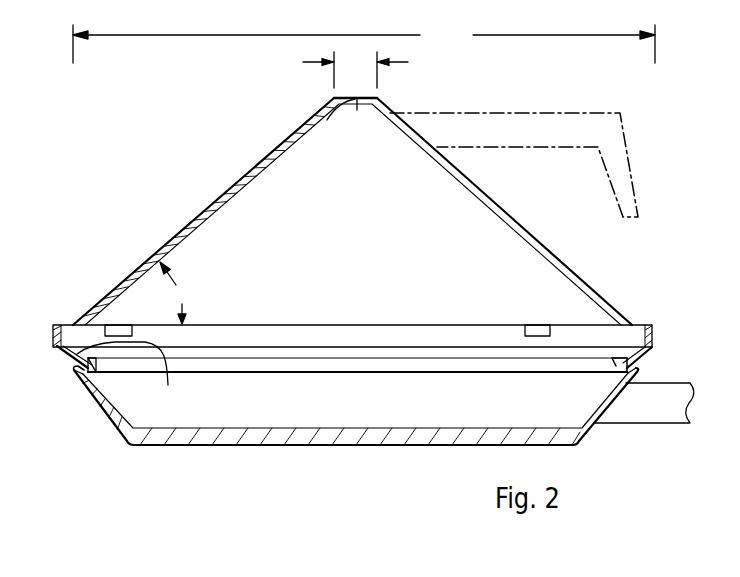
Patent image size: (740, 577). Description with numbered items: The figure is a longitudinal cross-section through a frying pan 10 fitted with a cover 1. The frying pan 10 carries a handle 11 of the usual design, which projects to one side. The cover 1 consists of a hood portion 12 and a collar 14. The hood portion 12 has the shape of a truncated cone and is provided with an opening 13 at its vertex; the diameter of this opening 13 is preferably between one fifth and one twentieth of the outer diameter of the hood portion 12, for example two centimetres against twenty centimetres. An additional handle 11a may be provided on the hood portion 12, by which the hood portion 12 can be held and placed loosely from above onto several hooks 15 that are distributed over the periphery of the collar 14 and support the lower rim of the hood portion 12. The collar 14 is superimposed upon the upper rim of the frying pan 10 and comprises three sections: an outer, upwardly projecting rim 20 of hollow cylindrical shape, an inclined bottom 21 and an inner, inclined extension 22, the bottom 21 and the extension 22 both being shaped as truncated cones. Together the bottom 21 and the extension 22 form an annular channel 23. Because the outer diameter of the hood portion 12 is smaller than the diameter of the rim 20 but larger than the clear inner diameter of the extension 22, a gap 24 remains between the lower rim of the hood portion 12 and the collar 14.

The cover 1 is at (176, 176).
The frying pan 10 is at (275, 430).
The handle 11 is at (655, 403).
The handle 11a is at (513, 123).
The hood portion 12 is at (269, 152).
The opening 13 is at (318, 110).
The collar 14 is at (660, 330).
The hooks 15 is at (120, 327).
The rim 20 is at (52, 338).
The bottom 21 is at (66, 362).
The extension 22 is at (96, 366).
The annular channel 23 is at (133, 375).
The gap 24 is at (64, 323).